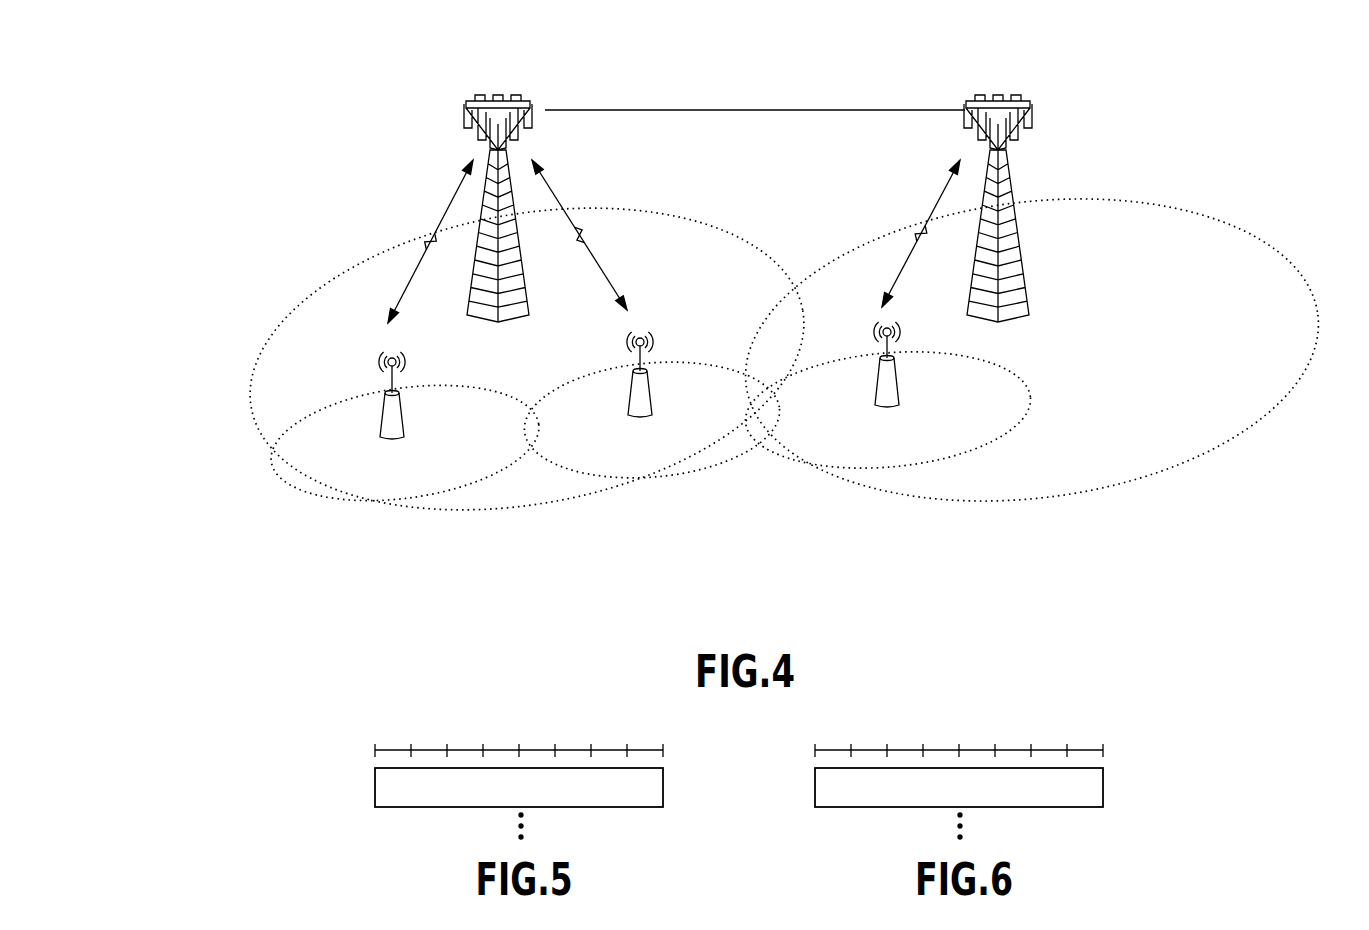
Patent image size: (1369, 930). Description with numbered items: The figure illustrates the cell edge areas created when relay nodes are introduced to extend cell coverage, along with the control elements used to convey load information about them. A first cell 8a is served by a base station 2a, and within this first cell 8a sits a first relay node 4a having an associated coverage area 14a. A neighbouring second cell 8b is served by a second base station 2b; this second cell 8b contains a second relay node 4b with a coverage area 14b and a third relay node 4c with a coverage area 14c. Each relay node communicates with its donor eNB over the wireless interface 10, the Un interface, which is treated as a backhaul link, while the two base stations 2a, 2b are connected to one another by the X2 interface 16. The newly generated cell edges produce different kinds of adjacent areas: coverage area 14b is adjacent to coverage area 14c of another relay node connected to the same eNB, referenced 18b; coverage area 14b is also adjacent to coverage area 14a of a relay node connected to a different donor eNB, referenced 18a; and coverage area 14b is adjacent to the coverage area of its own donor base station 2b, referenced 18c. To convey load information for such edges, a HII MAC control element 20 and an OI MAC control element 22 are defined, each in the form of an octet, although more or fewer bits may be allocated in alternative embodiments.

In FIG. 4, the base station 2a is at (1023, 270).
In FIG. 4, the second base station 2b is at (523, 268).
In FIG. 4, the first relay node 4a is at (896, 373).
In FIG. 4, the second relay node 4b is at (650, 388).
In FIG. 4, the third relay node 4c is at (400, 401).
In FIG. 4, the first cell 8a is at (1085, 200).
In FIG. 4, the second cell 8b is at (320, 286).
In FIG. 4, the wireless interface 10 is at (439, 227).
In FIG. 4, the coverage area 14a is at (826, 377).
In FIG. 4, the coverage area 14b is at (580, 388).
In FIG. 4, the coverage area 14c is at (331, 404).
In FIG. 4, the X2 interface 16 is at (706, 111).
In FIG. 4, the adjacent area 18a is at (773, 413).
In FIG. 4, the adjacent area 18b is at (525, 438).
In FIG. 4, the adjacent area 18c is at (593, 377).
In FIG. 5, the HII MAC control element 20 is at (375, 792).
In FIG. 6, the OI MAC control element 22 is at (815, 792).